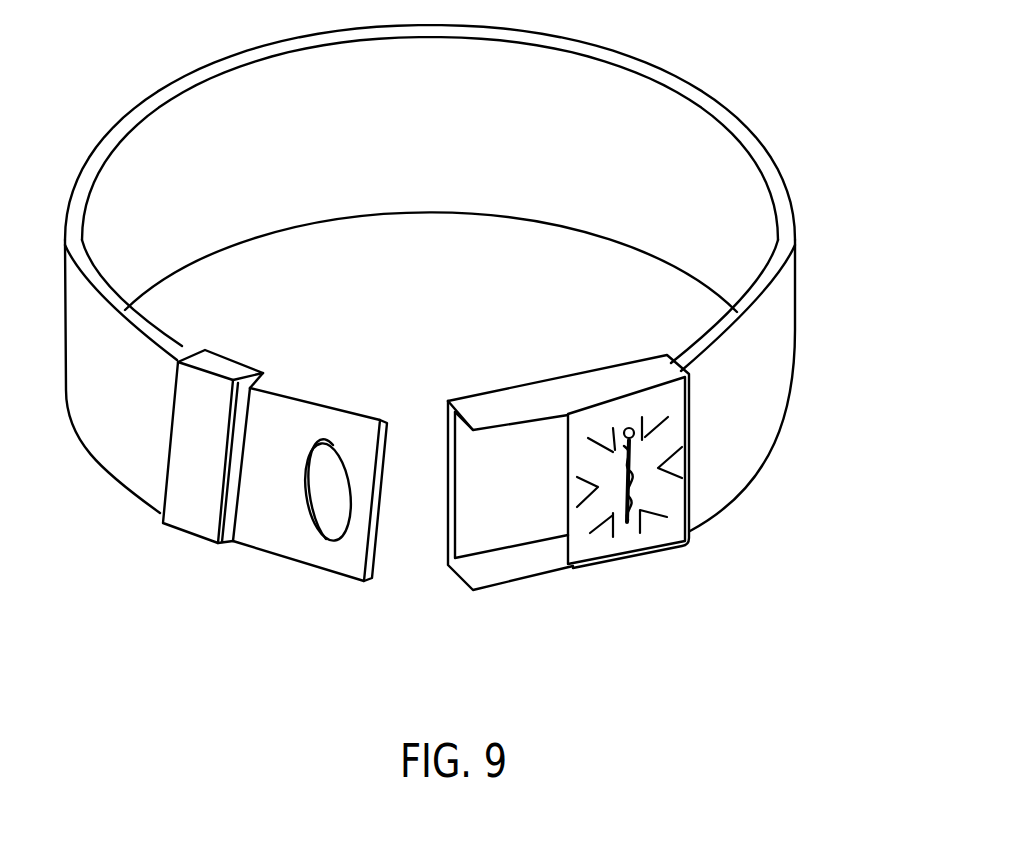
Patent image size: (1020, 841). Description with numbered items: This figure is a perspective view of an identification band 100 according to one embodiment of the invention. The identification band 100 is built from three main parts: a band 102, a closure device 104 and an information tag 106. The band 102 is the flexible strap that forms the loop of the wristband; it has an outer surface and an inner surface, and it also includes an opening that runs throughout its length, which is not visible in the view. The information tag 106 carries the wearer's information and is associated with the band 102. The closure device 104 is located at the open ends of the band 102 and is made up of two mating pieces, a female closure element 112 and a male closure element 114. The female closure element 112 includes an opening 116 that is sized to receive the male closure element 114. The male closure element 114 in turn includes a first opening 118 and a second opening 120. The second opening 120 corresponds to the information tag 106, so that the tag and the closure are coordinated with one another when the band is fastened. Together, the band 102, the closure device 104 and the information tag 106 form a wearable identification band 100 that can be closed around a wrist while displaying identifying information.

The identification band 100 is at (762, 98).
The band 102 is at (705, 433).
The closure device 104 is at (552, 593).
The information tag 106 is at (383, 123).
The female closure element 112 is at (492, 598).
The male closure element 114 is at (240, 539).
The opening 116 is at (572, 568).
The first opening 118 is at (323, 553).
The second opening 120 is at (222, 492).